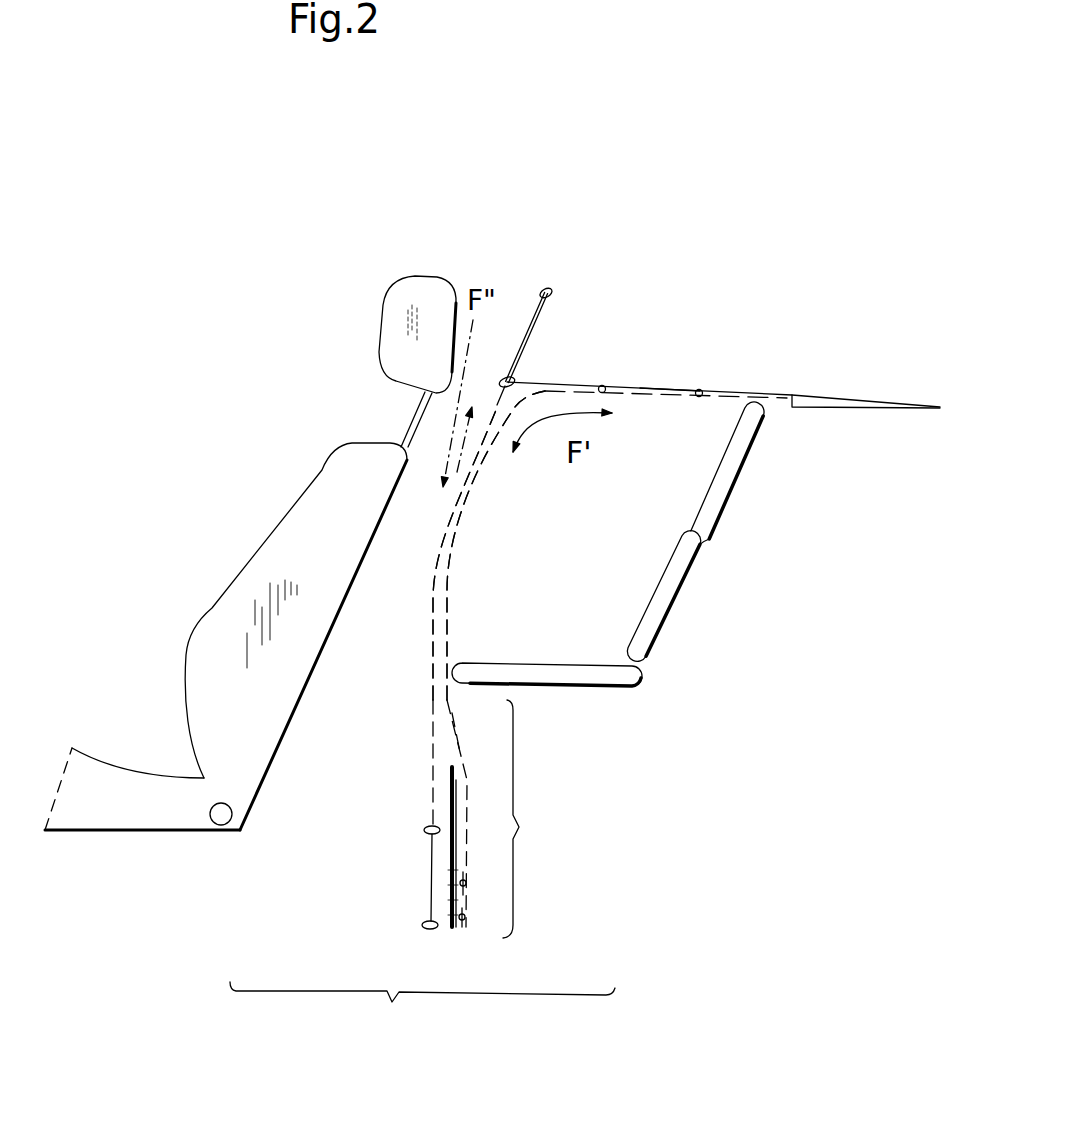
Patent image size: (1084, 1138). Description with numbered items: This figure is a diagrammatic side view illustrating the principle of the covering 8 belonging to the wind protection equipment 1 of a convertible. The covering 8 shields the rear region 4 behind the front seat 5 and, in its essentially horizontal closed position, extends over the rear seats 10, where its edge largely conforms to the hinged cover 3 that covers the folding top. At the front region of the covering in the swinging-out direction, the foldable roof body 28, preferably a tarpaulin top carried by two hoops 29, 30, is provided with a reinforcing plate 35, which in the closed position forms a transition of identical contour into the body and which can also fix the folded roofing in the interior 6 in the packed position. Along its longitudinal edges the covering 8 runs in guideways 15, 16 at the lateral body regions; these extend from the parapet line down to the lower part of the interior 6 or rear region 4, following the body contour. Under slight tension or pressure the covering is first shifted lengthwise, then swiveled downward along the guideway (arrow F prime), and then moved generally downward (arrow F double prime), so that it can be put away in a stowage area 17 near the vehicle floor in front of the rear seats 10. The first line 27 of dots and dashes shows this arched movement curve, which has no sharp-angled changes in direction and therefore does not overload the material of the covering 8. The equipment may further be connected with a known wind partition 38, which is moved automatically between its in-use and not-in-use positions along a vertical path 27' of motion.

The wind protection equipment 1 is at (666, 212).
The hinged cover 3 is at (925, 404).
The rear region 4 is at (422, 1011).
The front seat 5 is at (322, 527).
The interior 6 is at (312, 845).
The covering 8 is at (770, 392).
The rear seats 10 is at (660, 615).
The guideway 15 is at (479, 514).
The guideway 16 is at (496, 545).
The stowage area 17 is at (486, 819).
The first line of dots and dashes 27 is at (502, 659).
The vertical path of motion 27' is at (500, 615).
The foldable roof body 28 is at (656, 387).
The hoop 29 is at (603, 385).
The hoop 30 is at (700, 389).
The reinforcing plate 35 is at (806, 397).
The wind partition 38 is at (528, 340).